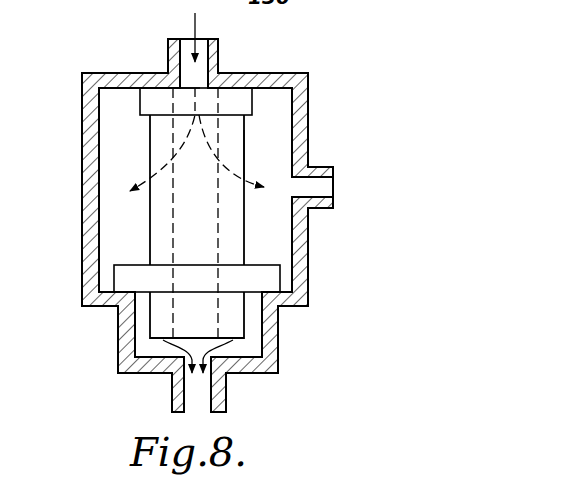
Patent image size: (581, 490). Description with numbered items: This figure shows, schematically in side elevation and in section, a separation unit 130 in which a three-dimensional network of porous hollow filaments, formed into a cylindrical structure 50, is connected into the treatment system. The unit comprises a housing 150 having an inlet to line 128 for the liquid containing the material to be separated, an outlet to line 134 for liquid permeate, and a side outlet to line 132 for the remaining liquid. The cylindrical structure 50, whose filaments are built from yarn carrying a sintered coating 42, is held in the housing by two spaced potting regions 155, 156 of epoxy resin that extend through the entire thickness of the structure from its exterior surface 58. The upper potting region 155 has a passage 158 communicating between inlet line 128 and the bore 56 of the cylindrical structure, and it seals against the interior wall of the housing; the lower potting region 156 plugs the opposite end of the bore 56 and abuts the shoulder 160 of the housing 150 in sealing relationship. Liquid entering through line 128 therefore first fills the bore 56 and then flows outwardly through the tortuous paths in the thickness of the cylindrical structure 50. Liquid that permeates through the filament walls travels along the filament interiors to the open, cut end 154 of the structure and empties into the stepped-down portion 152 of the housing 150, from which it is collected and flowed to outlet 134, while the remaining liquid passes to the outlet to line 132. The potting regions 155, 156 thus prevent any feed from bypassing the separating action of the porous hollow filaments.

The separation unit 130 is at (78, 166).
The housing 150 is at (82, 214).
The inlet line 128 is at (218, 56).
The potting region 155 is at (250, 98).
The cylindrical structure 50 is at (245, 222).
The potting region 156 is at (132, 278).
The exterior surface 58 is at (148, 231).
The bore 56 is at (212, 133).
The coating 42 is at (230, 157).
The outlet line 132 is at (323, 207).
The shoulder 160 is at (282, 306).
The stepped-down portion 152 is at (120, 352).
The end of the cylindrical structure 154 is at (170, 358).
The outlet line 134 is at (215, 398).
The passage 158 is at (180, 97).